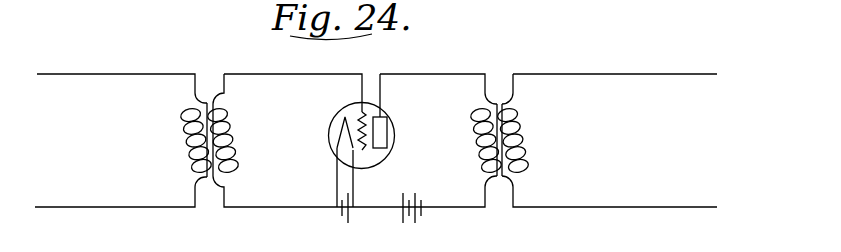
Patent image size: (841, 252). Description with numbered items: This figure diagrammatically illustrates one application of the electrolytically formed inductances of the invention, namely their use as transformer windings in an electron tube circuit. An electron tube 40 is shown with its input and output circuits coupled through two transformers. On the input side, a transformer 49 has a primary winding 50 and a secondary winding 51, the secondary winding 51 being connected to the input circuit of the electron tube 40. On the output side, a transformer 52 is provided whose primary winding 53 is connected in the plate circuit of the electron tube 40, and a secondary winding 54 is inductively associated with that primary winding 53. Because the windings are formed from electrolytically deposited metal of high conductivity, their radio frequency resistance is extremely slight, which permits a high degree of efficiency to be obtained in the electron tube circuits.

The vacuum tube detector 40 is at (364, 110).
The transformer 49 is at (207, 107).
The primary winding 50 is at (186, 130).
The secondary winding 51 is at (233, 127).
The transformer 52 is at (498, 108).
The primary winding 53 is at (480, 123).
The secondary winding 54 is at (523, 128).